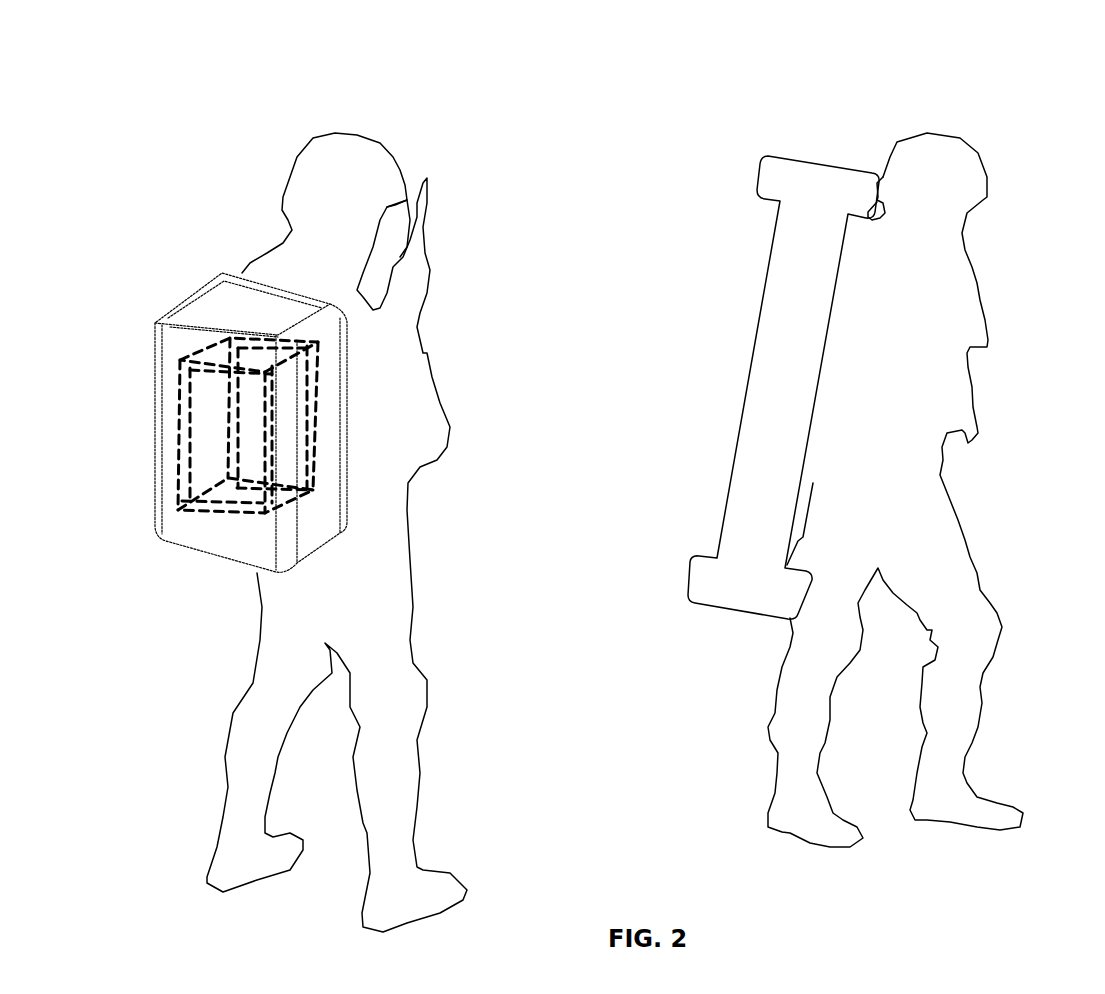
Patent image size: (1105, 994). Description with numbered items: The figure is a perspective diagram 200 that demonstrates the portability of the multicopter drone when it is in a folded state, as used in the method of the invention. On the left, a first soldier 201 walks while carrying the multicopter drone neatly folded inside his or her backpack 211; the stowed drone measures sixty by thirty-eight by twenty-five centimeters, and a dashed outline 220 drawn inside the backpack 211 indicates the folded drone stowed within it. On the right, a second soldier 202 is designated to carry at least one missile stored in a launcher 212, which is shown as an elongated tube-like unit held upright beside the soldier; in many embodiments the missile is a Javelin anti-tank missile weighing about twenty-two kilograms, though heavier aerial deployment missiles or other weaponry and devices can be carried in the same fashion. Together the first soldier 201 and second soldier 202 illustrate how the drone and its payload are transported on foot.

The perspective diagram 200 is at (802, 106).
The first soldier 201 is at (427, 353).
The second soldier 202 is at (978, 283).
The backpack 211 is at (157, 477).
The launcher 212 is at (762, 297).
The inner compartment / payload within container 220 is at (180, 388).